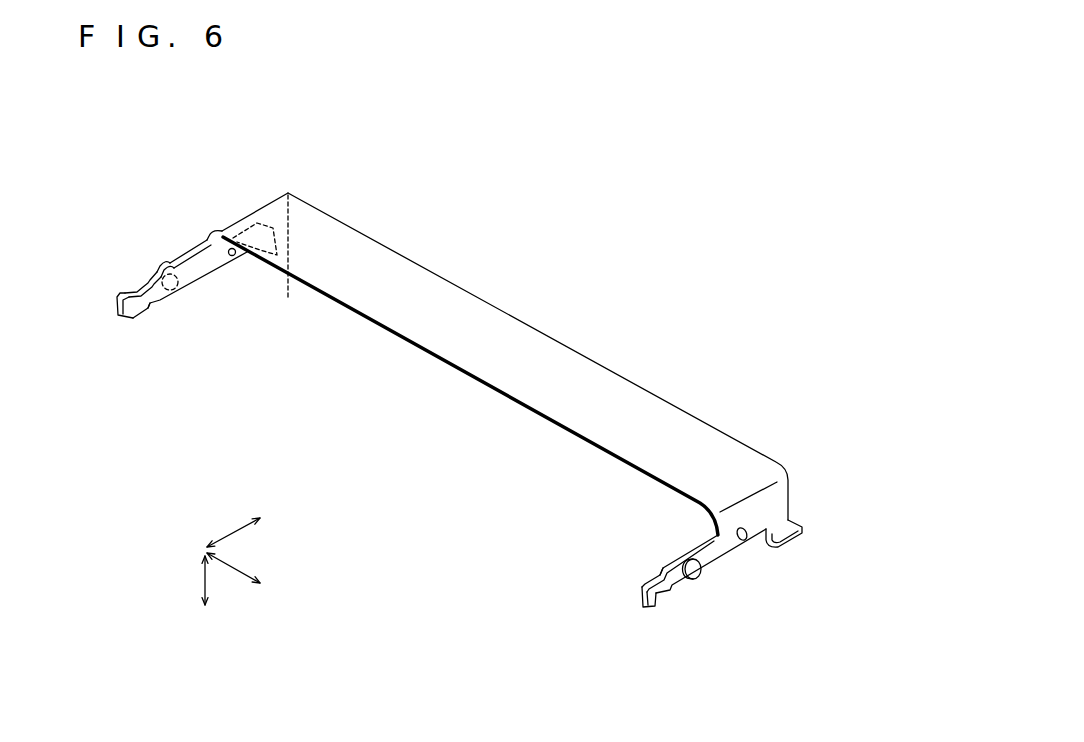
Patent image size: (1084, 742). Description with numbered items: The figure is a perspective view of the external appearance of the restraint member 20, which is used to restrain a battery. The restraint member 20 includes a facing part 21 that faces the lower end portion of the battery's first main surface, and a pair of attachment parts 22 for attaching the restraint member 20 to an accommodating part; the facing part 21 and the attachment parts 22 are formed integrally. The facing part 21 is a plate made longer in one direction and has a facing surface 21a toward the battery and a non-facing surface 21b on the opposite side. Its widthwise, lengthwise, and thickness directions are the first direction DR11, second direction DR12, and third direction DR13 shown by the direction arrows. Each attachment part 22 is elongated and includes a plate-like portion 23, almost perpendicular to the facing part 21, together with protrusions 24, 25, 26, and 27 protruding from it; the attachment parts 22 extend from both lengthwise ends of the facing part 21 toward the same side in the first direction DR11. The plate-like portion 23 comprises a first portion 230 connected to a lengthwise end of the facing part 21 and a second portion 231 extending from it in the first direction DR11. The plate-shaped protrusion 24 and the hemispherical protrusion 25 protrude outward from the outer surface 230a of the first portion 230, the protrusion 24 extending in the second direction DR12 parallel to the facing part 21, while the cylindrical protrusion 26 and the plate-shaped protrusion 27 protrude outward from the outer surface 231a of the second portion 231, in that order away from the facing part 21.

The restraint member 20 is at (478, 230).
The facing part 21 is at (520, 338).
The facing surface 21a is at (622, 430).
The non-facing surface 21b is at (617, 380).
The attachment part 22 is at (183, 247).
The plate-like portion 23 is at (155, 312).
The protrusion 24 is at (820, 547).
The protrusion 25 is at (235, 257).
The protrusion 26 is at (188, 297).
The protrusion 27 is at (122, 313).
The first portion 230 is at (252, 210).
The outer surface of the first portion 230a is at (267, 203).
The second portion 231 is at (143, 290).
The outer surface of the second portion 231a is at (155, 275).
The first direction DR11 is at (261, 523).
The second direction DR12 is at (264, 579).
The third direction DR13 is at (204, 597).